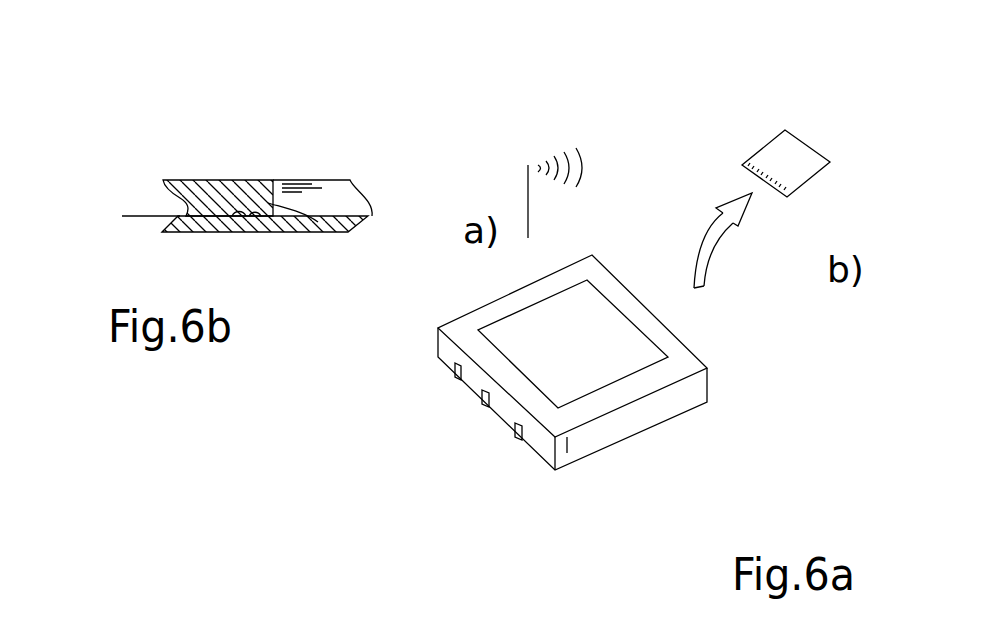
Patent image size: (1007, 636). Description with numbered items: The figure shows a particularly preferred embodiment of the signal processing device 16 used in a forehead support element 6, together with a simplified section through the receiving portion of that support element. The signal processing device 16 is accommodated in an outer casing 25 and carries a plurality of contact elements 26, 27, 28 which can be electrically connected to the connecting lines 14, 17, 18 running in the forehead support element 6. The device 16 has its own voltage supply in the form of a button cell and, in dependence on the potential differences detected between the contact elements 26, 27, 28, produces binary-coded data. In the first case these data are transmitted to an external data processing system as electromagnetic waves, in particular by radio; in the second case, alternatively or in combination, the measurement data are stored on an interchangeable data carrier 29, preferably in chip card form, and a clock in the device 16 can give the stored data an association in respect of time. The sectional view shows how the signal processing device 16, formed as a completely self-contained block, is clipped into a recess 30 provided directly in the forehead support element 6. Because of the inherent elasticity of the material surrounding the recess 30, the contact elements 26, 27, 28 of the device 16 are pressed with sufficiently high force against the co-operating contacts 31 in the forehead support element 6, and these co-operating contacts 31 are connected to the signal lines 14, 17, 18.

In FIG. 6b, the forehead support element 6 is at (211, 180).
In FIG. 6b, the connecting line 14 is at (202, 140).
In FIG. 6b, the connecting line 17 is at (245, 224).
In FIG. 6b, the connecting line 18 is at (137, 215).
In FIG. 6a, the signal processing device 16 is at (593, 367).
In FIG. 6a, the outer casing 25 is at (643, 415).
In FIG. 6a, the contact element 26 is at (455, 381).
In FIG. 6a, the contact element 27 is at (480, 408).
In FIG. 6a, the contact element 28 is at (515, 440).
In FIG. 6a, the data carrier 29 is at (788, 163).
In FIG. 6b, the recess 30 is at (331, 152).
In FIG. 6b, the co-operating contacts 31 is at (318, 222).